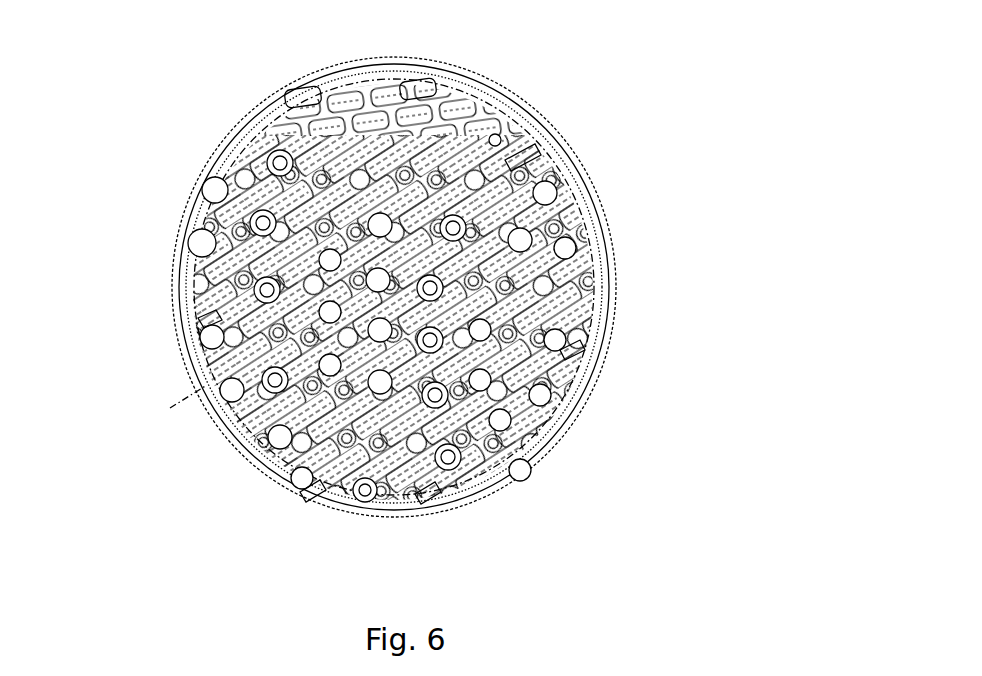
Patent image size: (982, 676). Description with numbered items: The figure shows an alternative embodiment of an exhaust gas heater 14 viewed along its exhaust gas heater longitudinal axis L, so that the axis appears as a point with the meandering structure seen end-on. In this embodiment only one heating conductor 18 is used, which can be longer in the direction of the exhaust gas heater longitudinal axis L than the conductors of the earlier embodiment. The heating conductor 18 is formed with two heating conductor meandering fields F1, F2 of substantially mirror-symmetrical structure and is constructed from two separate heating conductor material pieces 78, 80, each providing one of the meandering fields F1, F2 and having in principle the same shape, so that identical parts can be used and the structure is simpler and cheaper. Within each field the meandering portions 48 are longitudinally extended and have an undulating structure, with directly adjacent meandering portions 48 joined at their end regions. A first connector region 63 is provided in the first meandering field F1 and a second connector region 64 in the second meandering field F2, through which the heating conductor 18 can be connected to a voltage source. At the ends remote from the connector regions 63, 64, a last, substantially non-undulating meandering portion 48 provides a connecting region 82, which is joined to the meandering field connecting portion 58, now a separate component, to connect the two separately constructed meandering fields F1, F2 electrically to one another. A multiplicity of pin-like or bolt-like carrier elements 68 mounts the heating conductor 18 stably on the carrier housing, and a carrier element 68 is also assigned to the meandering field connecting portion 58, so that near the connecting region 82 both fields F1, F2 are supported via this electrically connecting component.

The exhaust gas heater 14 is at (636, 130).
The heating conductor 18 is at (510, 152).
The meandering portions 48 is at (215, 285).
The meandering field connecting portion 58 is at (390, 497).
The first connector region 63 is at (307, 100).
The second connector region 64 is at (425, 90).
The carrier elements 68 is at (272, 155).
The heating conductor material piece 78 is at (205, 322).
The heating conductor material piece 80 is at (562, 343).
The connecting region 82 is at (307, 490).
The first heating conductor meandering field F1 is at (143, 215).
The second heating conductor meandering field F2 is at (630, 242).
The exhaust gas heater longitudinal axis L is at (170, 408).